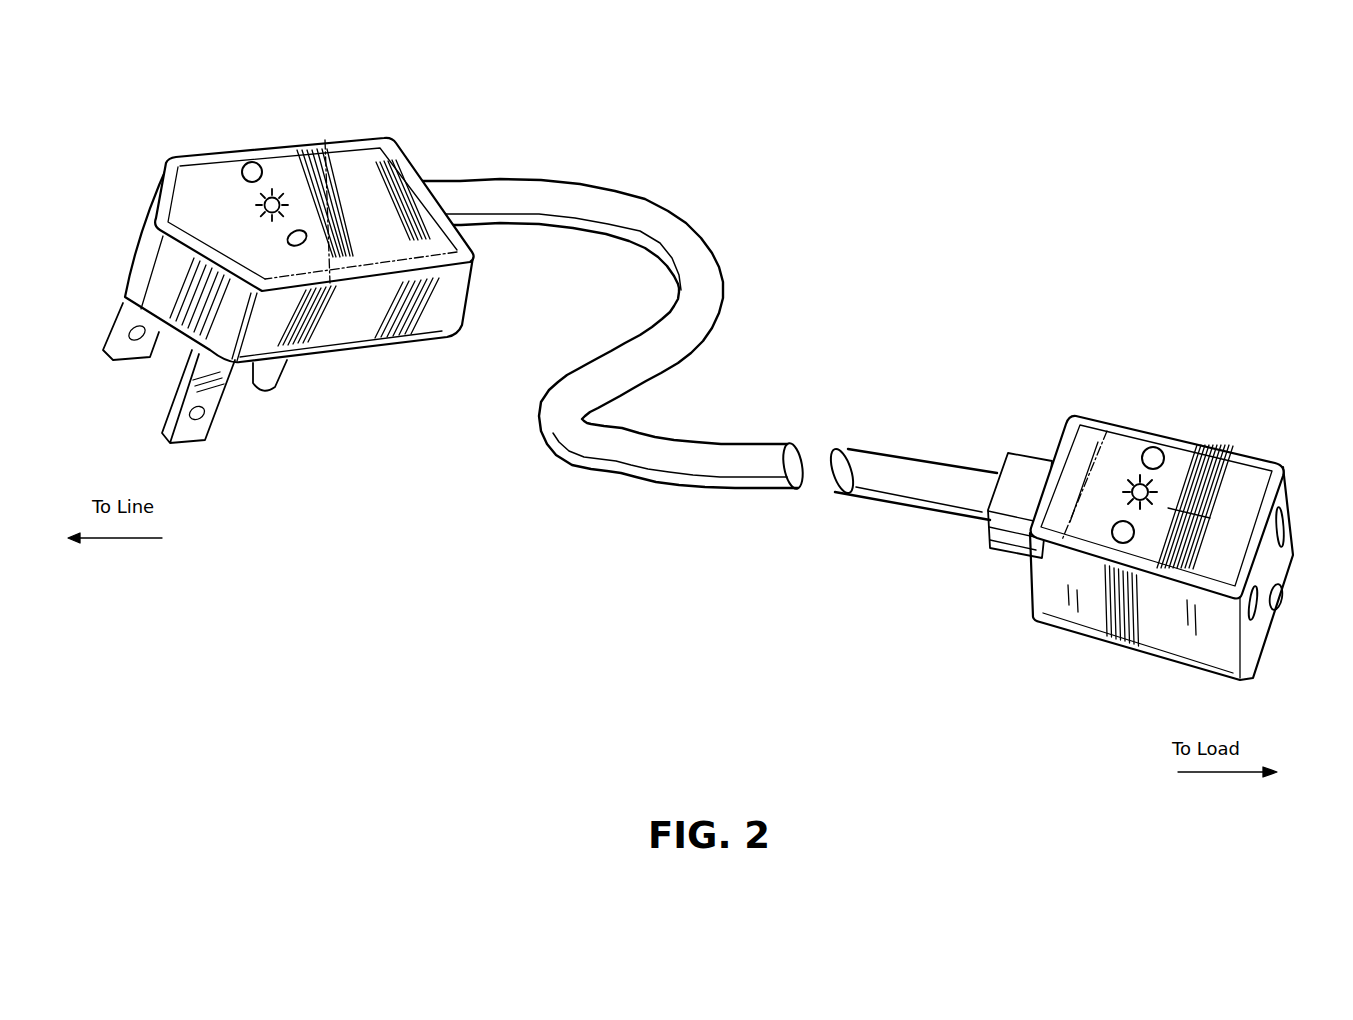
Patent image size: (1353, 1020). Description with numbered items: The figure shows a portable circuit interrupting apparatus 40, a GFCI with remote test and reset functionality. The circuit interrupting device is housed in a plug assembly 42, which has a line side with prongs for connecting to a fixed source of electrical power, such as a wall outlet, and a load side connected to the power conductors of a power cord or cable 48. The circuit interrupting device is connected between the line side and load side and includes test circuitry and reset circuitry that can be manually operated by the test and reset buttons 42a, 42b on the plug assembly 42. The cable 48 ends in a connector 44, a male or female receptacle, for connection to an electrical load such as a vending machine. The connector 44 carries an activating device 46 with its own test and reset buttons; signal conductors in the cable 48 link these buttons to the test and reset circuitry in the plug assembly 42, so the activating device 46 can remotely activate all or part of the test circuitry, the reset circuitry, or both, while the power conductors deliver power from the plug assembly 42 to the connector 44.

The portable circuit interrupting apparatus 40 is at (718, 407).
The plug assembly 42 is at (288, 254).
The test button 42a is at (254, 163).
The reset button 42b is at (306, 241).
The connector 44 is at (1127, 582).
The activating device 46 is at (1172, 510).
The power cord or cable 48 is at (722, 243).